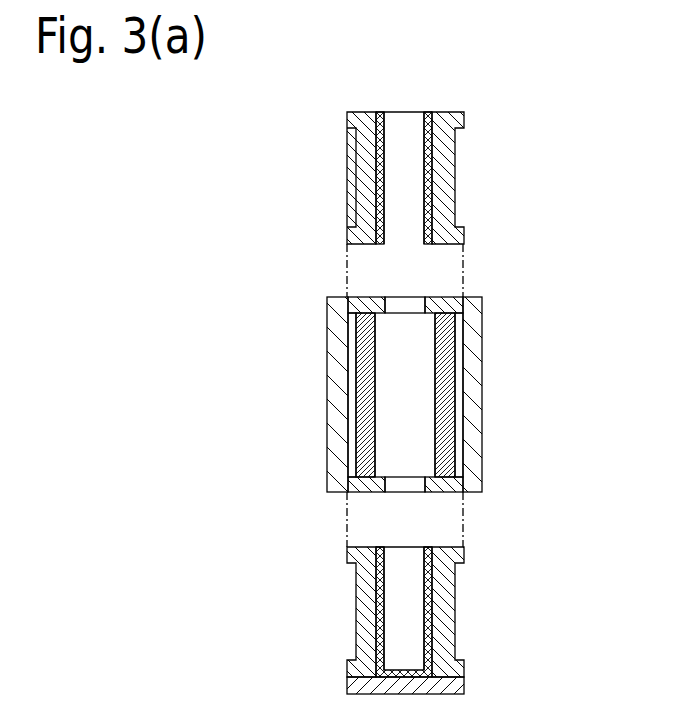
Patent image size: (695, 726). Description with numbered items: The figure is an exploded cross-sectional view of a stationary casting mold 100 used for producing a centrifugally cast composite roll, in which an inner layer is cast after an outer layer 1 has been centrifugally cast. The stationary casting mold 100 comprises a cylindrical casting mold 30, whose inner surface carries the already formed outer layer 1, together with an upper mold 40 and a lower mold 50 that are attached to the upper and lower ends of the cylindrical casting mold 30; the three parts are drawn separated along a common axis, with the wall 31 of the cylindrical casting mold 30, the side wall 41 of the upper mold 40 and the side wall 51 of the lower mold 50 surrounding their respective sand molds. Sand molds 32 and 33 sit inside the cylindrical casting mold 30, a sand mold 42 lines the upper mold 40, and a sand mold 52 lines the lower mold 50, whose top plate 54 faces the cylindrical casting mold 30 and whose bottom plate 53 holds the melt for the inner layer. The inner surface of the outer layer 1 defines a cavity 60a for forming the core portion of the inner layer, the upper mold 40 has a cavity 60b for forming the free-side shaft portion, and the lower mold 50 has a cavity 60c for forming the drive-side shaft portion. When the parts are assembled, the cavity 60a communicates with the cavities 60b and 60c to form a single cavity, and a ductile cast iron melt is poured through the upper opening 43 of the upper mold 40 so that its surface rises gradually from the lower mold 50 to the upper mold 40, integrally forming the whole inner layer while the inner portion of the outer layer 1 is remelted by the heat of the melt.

The stationary casting mold 100 is at (469, 395).
The outer layer 1 is at (446, 430).
The cylindrical casting mold 30 is at (426, 397).
The outer cylinder of holder 31 is at (477, 392).
The sand mold 32 is at (462, 333).
The sand mold 33 is at (458, 296).
The upper mold 40 is at (434, 160).
The upper cap body 41 is at (455, 152).
The sand mold 42 is at (432, 210).
The upper opening 43 is at (407, 112).
The lower mold 50 is at (433, 612).
The lower cap body 51 is at (455, 588).
The sand mold 52 is at (432, 636).
The bottom plate 53 is at (458, 689).
The lower cap top plate 54 is at (398, 546).
The cavity 60a is at (397, 388).
The cavity 60b is at (398, 175).
The cavity 60c is at (398, 605).